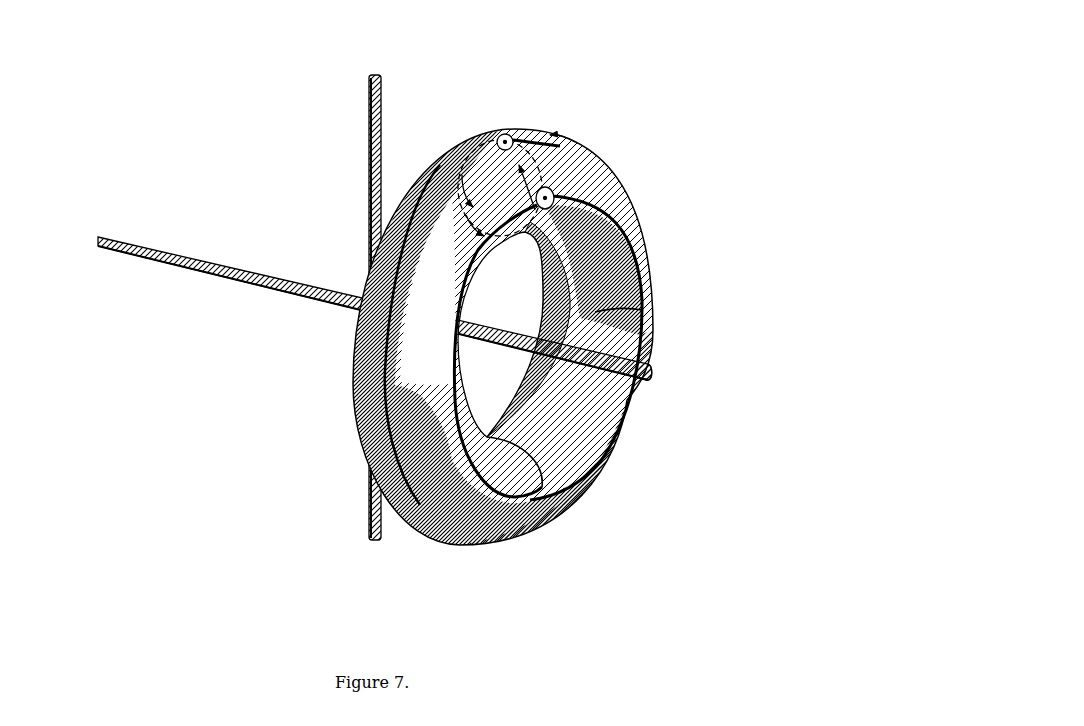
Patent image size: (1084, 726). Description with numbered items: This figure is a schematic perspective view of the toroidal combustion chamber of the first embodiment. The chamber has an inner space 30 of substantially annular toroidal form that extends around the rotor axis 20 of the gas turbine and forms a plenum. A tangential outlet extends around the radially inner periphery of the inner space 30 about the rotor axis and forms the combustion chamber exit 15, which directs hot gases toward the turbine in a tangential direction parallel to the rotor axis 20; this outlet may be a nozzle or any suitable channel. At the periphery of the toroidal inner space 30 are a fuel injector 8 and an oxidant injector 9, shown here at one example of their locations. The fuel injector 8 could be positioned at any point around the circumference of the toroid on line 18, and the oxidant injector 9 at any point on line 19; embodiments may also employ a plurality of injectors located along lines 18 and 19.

The fuel injector 8 is at (592, 202).
The oxidant injector 9 is at (548, 132).
The combustion chamber exit 15 is at (566, 391).
The line 18 is at (646, 236).
The line 19 is at (438, 170).
The rotor axis 20 is at (219, 253).
The inner space 30 is at (349, 367).